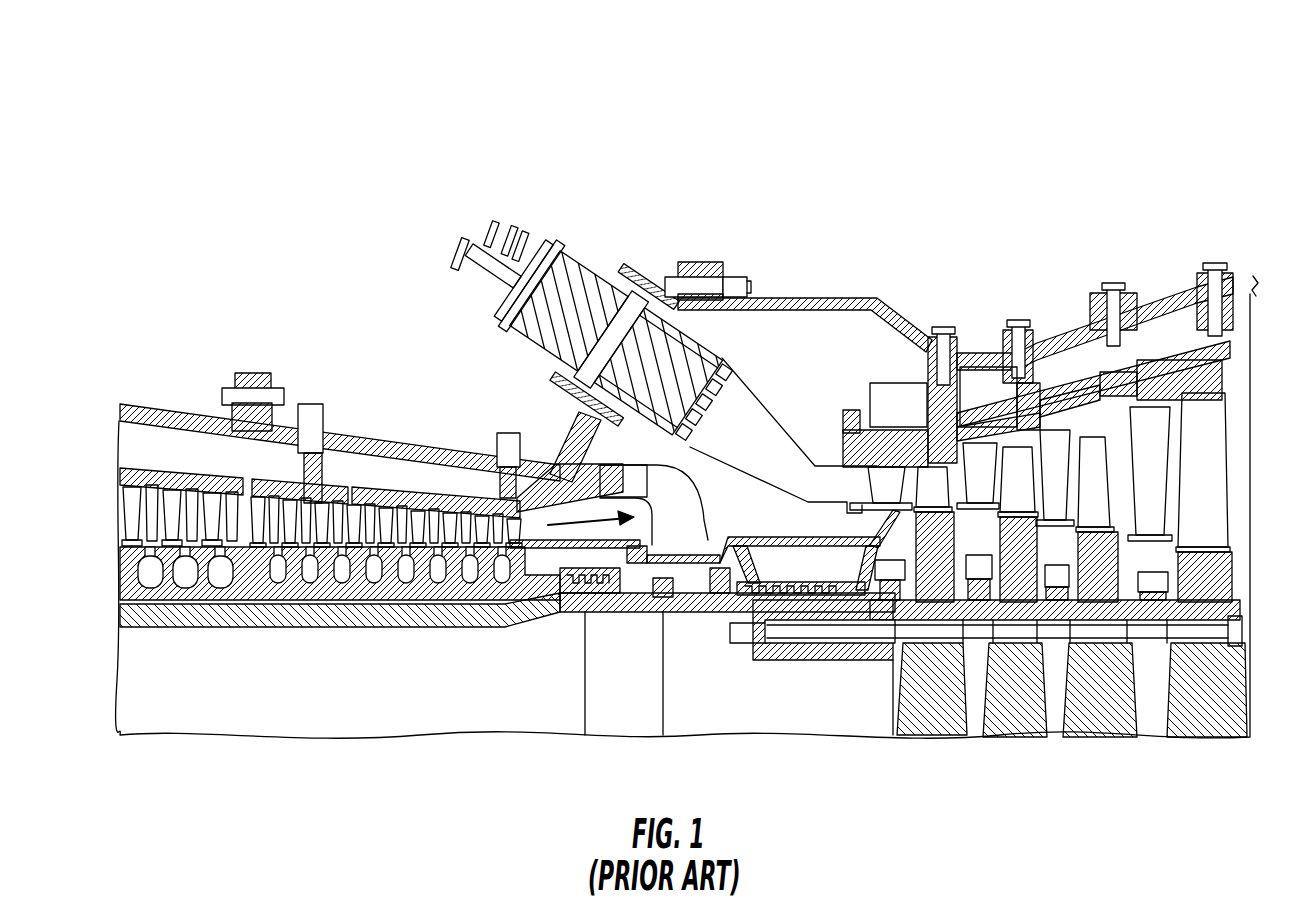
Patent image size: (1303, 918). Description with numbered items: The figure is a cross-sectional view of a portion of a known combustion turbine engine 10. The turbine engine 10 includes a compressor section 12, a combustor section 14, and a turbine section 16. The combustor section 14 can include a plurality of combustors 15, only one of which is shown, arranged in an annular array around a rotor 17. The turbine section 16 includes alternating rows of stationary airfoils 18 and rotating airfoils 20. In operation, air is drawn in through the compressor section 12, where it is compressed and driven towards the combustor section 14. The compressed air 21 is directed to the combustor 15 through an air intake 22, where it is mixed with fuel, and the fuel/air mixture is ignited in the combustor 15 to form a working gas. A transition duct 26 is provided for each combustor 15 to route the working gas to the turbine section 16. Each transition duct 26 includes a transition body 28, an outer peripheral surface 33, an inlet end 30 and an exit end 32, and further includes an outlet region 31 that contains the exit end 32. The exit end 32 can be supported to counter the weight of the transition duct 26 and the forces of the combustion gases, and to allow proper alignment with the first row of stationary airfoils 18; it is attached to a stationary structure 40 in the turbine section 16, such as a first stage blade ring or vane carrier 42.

The combustion turbine engine 10 is at (417, 124).
The compressor section 12 is at (222, 326).
The combustor section 14 is at (420, 291).
The combustor 15 is at (613, 300).
The turbine section 16 is at (1100, 244).
The rotor 17 is at (665, 598).
The stationary airfoils 18 is at (901, 498).
The rotating airfoils 20 is at (946, 498).
The compressed air 21 is at (560, 530).
The air intake 22 is at (705, 336).
The transition duct 26 is at (805, 410).
The transition body 28 is at (750, 430).
The inlet end 30 is at (727, 453).
The outlet region 31 is at (829, 518).
The exit end 32 is at (868, 482).
The outer peripheral surface 33 is at (727, 462).
The stationary structure 40 is at (859, 370).
The vane carrier 42 is at (867, 455).